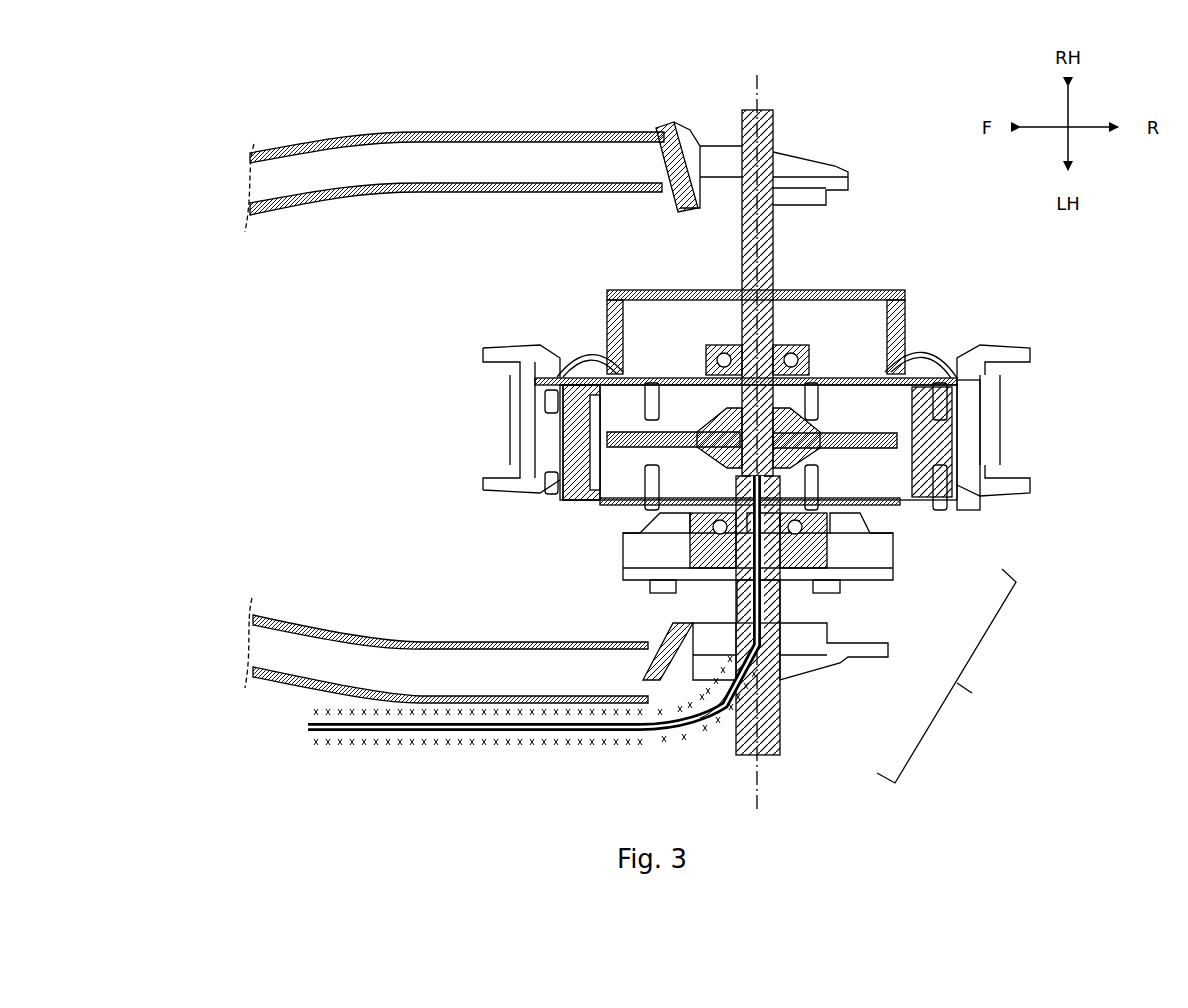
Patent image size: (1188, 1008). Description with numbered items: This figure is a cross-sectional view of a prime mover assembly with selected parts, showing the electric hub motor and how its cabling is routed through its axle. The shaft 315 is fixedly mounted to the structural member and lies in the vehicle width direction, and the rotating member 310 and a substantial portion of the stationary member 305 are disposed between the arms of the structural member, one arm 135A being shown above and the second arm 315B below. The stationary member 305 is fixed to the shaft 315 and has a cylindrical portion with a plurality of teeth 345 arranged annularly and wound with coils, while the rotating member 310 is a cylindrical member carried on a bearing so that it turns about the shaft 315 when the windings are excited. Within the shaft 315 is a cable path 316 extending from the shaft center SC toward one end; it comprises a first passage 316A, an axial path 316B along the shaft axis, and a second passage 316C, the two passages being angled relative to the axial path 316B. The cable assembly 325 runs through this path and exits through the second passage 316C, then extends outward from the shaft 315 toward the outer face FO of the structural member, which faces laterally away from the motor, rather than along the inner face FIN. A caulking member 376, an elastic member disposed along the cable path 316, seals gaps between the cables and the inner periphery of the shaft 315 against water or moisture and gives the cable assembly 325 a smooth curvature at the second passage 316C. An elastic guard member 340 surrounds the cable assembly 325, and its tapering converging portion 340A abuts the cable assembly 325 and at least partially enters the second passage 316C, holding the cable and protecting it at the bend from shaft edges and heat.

The arm 135A is at (432, 174).
The shaft 315 is at (780, 240).
The rotating member 310 is at (484, 353).
The plurality of teeth 345 is at (588, 420).
The stationary member 305 is at (523, 442).
The second arm 315B is at (371, 654).
The caulking member 376 is at (742, 596).
The first passage 316A is at (815, 506).
The axial path 316B is at (810, 584).
The second passage 316C is at (748, 676).
The cable path 316 is at (947, 676).
The cable assembly 325 is at (400, 738).
The elastic guard member 340 is at (488, 742).
The converging portion 340A is at (740, 666).
The shaft center SC is at (762, 432).
The inner face FIN is at (508, 640).
The outer face FO is at (282, 688).